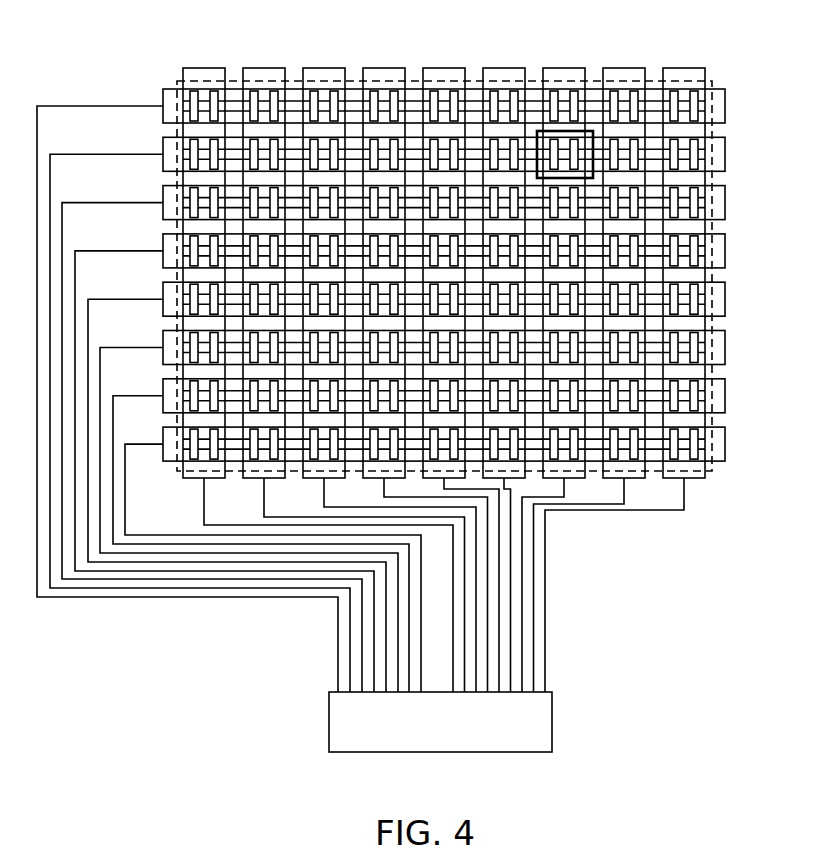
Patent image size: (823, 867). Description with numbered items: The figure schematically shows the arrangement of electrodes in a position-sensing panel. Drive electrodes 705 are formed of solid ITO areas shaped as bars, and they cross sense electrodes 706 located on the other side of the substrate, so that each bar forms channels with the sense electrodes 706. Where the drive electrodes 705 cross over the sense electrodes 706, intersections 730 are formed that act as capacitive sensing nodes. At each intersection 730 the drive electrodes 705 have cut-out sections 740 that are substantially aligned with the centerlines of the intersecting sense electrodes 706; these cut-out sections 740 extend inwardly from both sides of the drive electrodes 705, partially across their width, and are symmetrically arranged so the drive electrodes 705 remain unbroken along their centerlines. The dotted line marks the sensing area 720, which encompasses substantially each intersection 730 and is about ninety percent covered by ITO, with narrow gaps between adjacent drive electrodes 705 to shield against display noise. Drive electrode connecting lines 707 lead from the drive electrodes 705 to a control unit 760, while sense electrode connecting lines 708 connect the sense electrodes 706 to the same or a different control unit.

The drive electrodes 705 is at (163, 150).
The sense electrodes 706 is at (163, 248).
The drive electrode connecting lines 707 is at (64, 104).
The sense electrode connecting lines 708 is at (547, 562).
The sensing area 720 is at (177, 81).
The intersections 730 is at (593, 135).
The cut-out sections 740 is at (444, 84).
The control unit 760 is at (553, 722).